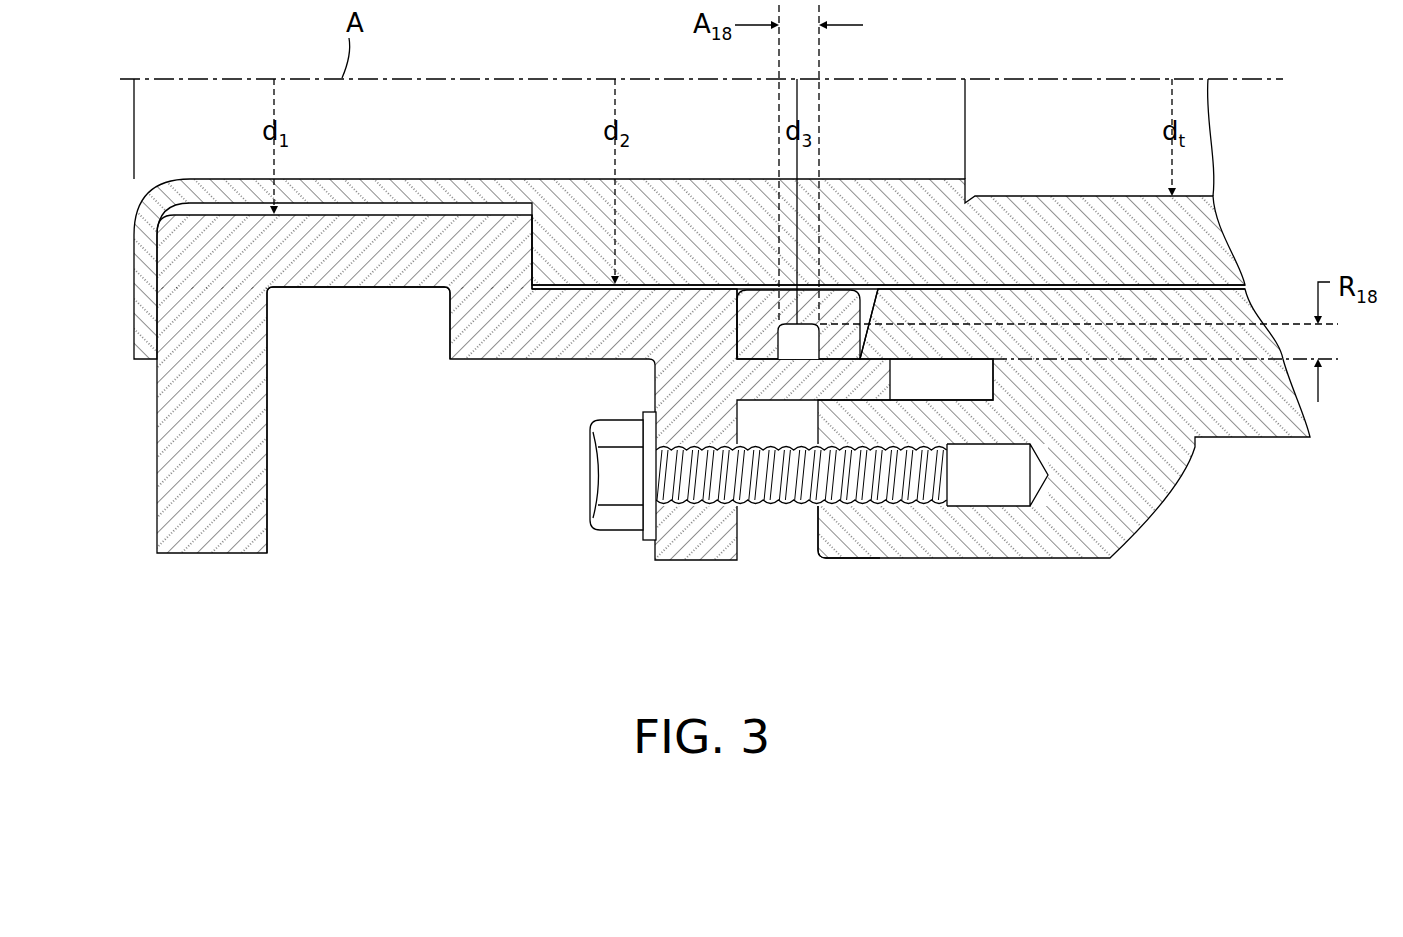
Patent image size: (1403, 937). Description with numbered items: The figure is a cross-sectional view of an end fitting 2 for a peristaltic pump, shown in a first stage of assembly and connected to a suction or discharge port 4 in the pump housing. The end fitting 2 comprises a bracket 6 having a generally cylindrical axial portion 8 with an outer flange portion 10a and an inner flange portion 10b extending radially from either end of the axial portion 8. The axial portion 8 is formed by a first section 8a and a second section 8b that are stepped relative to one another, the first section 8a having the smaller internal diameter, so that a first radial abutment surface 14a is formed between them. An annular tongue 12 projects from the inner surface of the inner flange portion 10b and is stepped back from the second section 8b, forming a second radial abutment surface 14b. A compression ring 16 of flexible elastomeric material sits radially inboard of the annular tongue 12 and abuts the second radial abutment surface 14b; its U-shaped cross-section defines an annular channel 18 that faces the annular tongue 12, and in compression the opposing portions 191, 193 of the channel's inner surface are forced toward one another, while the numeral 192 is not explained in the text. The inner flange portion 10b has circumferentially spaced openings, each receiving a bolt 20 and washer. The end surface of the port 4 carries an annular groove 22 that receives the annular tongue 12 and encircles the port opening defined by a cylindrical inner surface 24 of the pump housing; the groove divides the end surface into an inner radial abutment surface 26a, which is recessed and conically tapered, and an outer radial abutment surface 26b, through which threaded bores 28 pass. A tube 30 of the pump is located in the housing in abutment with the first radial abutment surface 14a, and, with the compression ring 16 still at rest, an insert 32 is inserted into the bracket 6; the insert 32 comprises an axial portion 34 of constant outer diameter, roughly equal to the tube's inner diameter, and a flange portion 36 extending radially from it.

The end fitting 2 is at (428, 562).
The port 4 is at (1237, 417).
The bracket 6 is at (311, 398).
The axial portion 8 is at (405, 247).
The first section 8a is at (343, 268).
The second section 8b is at (611, 337).
The outer flange portion 10a is at (175, 460).
The inner flange portion 10b is at (698, 548).
The annular tongue 12 is at (802, 392).
The first radial abutment surface 14a is at (532, 274).
The second radial abutment surface 14b is at (737, 322).
The compression ring 16 is at (655, 395).
The annular channel 18 is at (809, 350).
The opposing portion of inner surface of annular channel 191 is at (732, 346).
The second finger 192 is at (803, 322).
The opposing portion of inner surface of annular channel 193 is at (820, 345).
The bolt 20 is at (620, 533).
The annular groove 22 is at (956, 393).
The cylindrical inner surface 24 is at (1132, 287).
The inner radial abutment surface 26a is at (873, 312).
The outer radial abutment surface 26b is at (818, 543).
The threaded bore 28 is at (975, 497).
The tube 30 is at (1062, 195).
The insert 32 is at (516, 176).
The axial portion 34 is at (720, 178).
The flange portion 36 is at (134, 292).